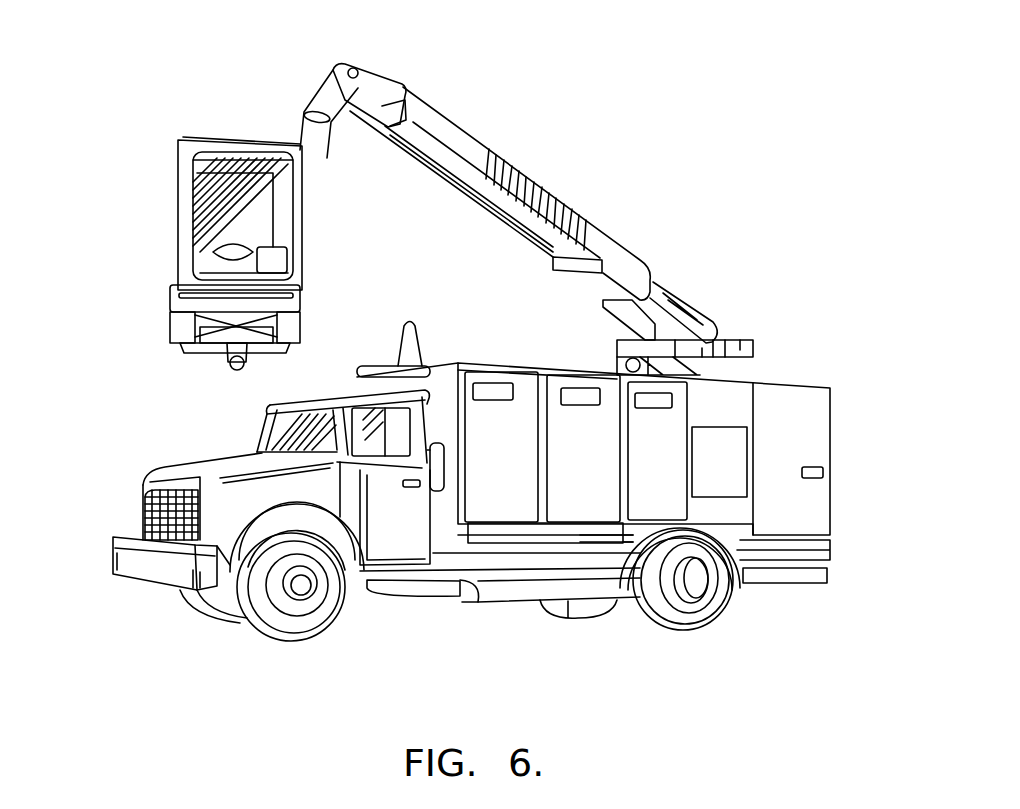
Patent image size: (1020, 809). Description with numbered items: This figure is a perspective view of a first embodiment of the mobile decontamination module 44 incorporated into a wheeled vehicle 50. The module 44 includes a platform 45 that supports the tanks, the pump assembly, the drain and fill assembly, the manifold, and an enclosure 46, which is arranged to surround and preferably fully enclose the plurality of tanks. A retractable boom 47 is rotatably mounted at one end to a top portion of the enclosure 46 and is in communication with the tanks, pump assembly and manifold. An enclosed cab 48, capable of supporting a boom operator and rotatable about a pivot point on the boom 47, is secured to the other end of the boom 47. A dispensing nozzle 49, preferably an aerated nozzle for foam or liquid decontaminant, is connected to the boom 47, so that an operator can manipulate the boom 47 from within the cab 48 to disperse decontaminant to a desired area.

The mobile decontamination module 44 is at (842, 477).
The platform 45 is at (830, 546).
The enclosure 46 is at (806, 390).
The retractable boom 47 is at (576, 212).
The enclosed cab 48 is at (183, 197).
The dispensing nozzle 49 is at (228, 362).
The wheeled vehicle 50 is at (118, 575).